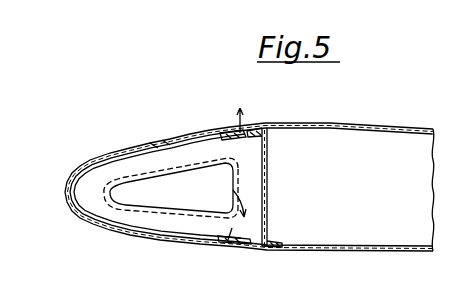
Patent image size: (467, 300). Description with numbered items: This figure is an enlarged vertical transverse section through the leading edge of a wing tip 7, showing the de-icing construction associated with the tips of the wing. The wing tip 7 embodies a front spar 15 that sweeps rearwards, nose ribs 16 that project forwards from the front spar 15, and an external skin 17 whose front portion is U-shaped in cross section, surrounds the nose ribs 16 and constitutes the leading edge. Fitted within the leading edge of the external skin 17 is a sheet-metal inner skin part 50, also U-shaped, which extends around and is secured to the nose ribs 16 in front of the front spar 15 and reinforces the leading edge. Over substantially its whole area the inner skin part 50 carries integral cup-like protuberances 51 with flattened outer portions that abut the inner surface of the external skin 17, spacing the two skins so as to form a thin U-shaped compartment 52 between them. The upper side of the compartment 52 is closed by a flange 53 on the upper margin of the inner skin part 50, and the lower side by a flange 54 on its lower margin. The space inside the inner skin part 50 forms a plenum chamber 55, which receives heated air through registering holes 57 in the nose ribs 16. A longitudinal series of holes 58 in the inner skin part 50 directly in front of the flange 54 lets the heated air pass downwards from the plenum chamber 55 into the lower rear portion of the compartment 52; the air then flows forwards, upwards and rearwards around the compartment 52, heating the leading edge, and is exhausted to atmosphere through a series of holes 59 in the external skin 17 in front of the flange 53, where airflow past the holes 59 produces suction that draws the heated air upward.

The wing tip 7 is at (348, 118).
The external skin 17 is at (418, 129).
The front spar 15 is at (272, 162).
The nose rib 16 is at (142, 217).
The inner skin part 50 is at (130, 160).
The cup-like protuberance 51 is at (136, 149).
The compartment 52 is at (162, 146).
The upper flange 53 is at (272, 135).
The lower flange 54 is at (268, 243).
The plenum chamber 55 is at (252, 195).
The hole in nose rib 57 is at (194, 207).
The hole in inner skin part 58 is at (238, 237).
The vent hole in external skin 59 is at (232, 132).